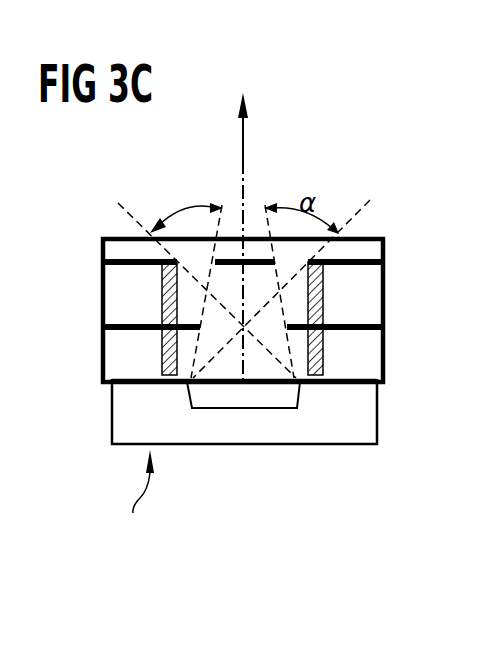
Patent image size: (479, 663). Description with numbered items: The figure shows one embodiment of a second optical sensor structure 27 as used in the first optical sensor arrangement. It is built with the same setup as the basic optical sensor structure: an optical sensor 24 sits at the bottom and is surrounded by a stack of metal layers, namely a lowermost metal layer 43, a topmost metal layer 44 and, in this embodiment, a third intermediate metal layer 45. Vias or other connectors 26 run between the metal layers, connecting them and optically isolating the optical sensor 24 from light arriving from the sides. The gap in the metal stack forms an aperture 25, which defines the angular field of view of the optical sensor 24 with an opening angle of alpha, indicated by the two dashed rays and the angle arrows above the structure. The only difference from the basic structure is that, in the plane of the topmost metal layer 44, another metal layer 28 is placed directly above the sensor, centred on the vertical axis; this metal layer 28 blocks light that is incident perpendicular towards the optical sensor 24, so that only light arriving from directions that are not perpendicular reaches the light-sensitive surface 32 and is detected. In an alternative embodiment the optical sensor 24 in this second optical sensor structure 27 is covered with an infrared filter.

The optical sensor 24 is at (220, 392).
The aperture 25 is at (195, 251).
The vias or other connectors 26 is at (162, 286).
The second optical sensor structure 27 is at (137, 501).
The metal layer 28 is at (229, 262).
The light-sensitive surface 32 is at (266, 382).
The metal layer 43 is at (383, 378).
The topmost metal layer 44 is at (383, 263).
The metal layer 45 is at (104, 327).